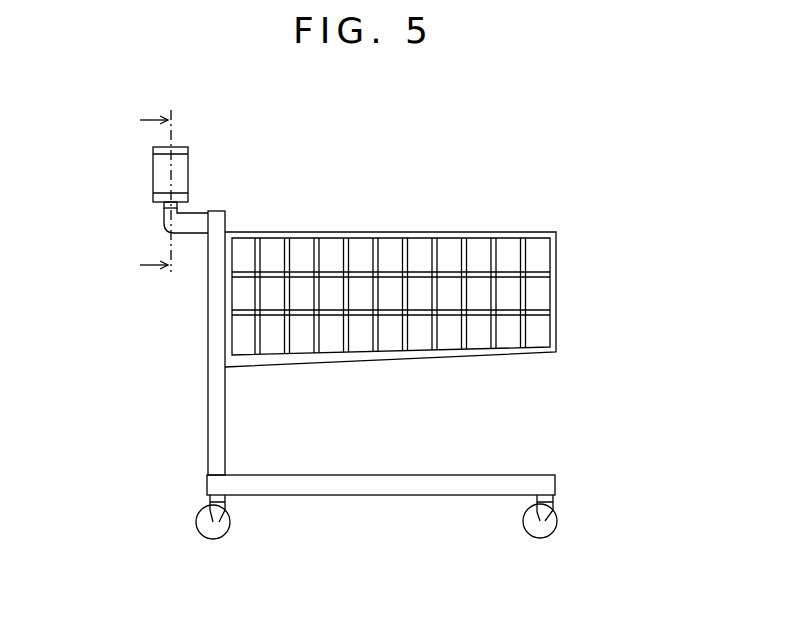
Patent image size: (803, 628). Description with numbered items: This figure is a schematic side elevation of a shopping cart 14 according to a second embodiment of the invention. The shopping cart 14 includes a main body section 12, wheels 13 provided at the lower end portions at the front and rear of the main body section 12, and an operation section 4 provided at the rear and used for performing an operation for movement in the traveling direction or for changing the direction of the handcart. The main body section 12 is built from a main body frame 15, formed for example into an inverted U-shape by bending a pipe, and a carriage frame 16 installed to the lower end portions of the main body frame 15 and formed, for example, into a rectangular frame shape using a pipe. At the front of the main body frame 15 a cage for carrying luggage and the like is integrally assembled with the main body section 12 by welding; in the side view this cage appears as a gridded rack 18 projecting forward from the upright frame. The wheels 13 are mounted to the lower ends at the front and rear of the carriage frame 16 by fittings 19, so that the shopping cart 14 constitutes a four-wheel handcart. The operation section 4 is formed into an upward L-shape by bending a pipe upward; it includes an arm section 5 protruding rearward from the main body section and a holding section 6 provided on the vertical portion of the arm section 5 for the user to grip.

The operation section 4 is at (201, 137).
The arm section 5 is at (188, 220).
The holding section 6 is at (160, 178).
The main body section 12 is at (369, 397).
The wheel 13 is at (198, 544).
The shopping cart 14 is at (434, 316).
The main body frame 15 is at (215, 407).
The carriage frame 16 is at (425, 480).
The shelf rack 18 is at (563, 272).
The fitting 19 is at (206, 512).